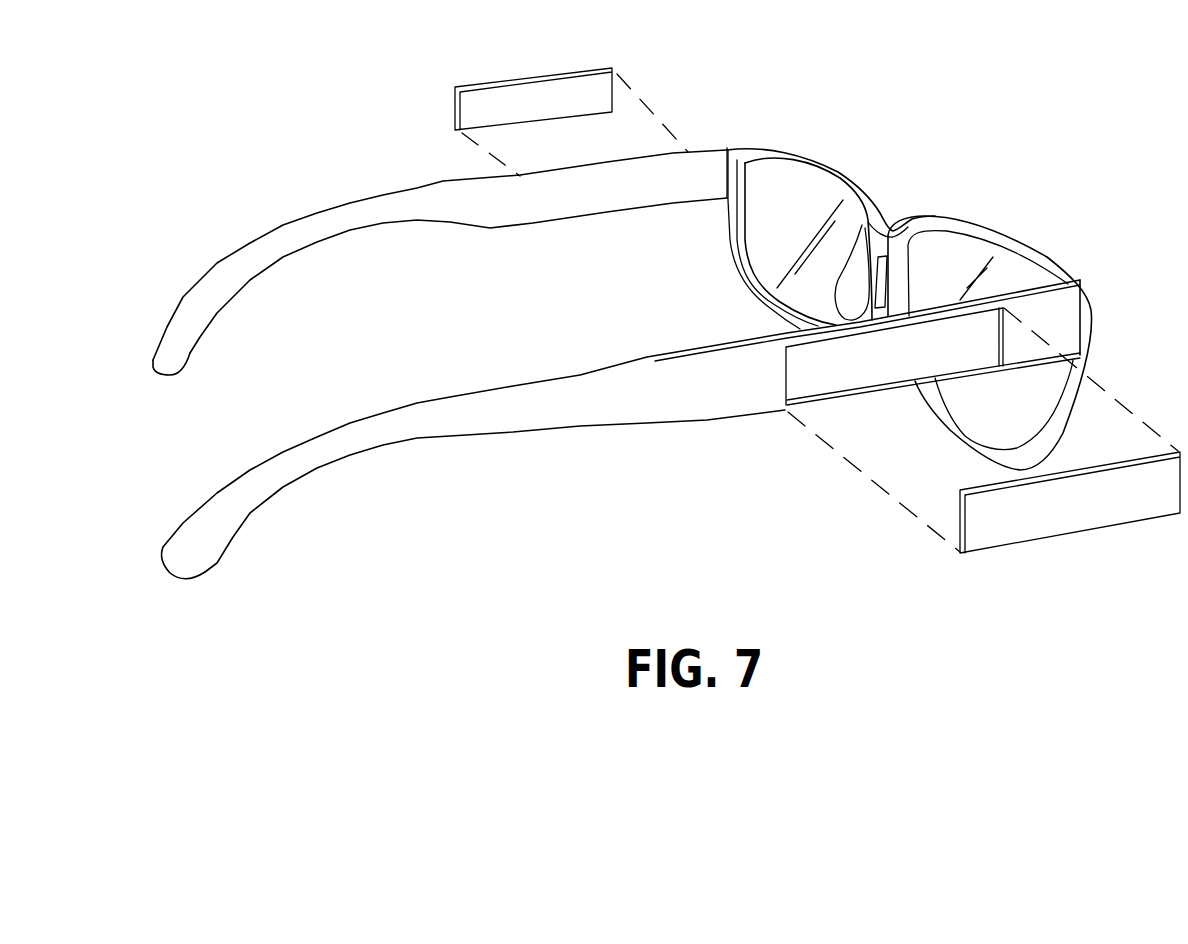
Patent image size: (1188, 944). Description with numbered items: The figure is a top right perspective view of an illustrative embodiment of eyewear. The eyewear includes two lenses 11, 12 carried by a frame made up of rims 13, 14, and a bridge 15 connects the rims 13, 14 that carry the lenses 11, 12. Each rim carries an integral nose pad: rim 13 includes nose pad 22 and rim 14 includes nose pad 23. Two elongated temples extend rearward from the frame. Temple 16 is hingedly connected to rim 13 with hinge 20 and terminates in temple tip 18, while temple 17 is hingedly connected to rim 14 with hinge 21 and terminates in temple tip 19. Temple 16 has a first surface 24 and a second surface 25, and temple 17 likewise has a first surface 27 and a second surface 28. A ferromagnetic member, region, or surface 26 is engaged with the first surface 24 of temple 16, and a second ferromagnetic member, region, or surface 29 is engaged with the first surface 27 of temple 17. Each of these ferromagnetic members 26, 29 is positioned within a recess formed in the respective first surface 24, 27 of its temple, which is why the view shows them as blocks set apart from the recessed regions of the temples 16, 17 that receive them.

The lens 11 is at (767, 228).
The lens 12 is at (1008, 418).
The rim 13 is at (792, 157).
The rim 14 is at (1008, 225).
The bridge 15 is at (883, 220).
The temple 16 is at (443, 180).
The temple 17 is at (510, 413).
The temple tip 18 is at (171, 358).
The temple tip 19 is at (200, 548).
The hinge 20 is at (733, 148).
The hinge 21 is at (1081, 283).
The nose pad 22 is at (849, 282).
The nose pad 23 is at (907, 224).
The first surface 24 is at (621, 165).
The second surface 25 is at (520, 207).
The ferromagnetic member, region, or surface 26 is at (508, 80).
The first surface 27 is at (723, 390).
The second surface 28 is at (727, 340).
The ferromagnetic member, region, or surface 29 is at (1040, 520).